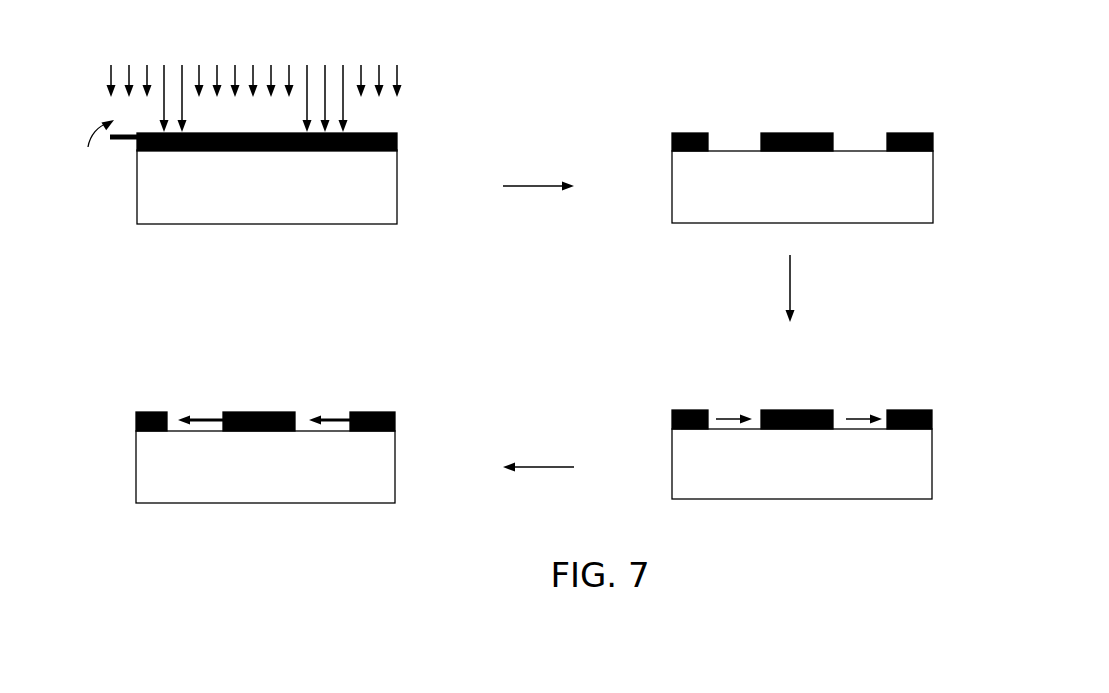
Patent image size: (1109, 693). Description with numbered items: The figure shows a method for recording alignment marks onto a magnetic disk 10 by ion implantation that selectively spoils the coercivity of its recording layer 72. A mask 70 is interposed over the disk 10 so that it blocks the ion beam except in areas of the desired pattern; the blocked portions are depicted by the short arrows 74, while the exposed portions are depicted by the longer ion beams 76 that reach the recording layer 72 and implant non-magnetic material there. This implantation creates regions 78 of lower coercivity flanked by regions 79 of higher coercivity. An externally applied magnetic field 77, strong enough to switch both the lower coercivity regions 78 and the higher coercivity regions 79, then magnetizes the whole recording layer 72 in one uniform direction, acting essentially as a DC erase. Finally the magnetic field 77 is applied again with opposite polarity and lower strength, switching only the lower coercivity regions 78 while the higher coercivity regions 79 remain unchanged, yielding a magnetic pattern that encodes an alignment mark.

The disk 10 is at (145, 212).
The mask 70 is at (100, 148).
The recording layer 72 is at (398, 145).
The short arrows 74 is at (398, 95).
The ion beams 76 is at (190, 109).
The externally applied magnetic field 77 is at (790, 283).
The regions of lower coercivity 78 is at (726, 139).
The regions of higher coercivity 79 is at (913, 133).